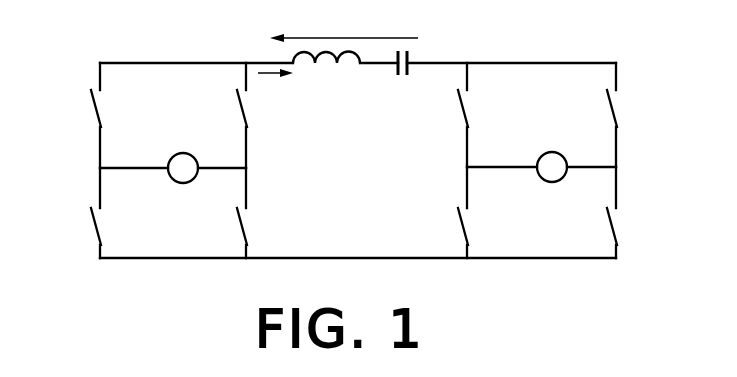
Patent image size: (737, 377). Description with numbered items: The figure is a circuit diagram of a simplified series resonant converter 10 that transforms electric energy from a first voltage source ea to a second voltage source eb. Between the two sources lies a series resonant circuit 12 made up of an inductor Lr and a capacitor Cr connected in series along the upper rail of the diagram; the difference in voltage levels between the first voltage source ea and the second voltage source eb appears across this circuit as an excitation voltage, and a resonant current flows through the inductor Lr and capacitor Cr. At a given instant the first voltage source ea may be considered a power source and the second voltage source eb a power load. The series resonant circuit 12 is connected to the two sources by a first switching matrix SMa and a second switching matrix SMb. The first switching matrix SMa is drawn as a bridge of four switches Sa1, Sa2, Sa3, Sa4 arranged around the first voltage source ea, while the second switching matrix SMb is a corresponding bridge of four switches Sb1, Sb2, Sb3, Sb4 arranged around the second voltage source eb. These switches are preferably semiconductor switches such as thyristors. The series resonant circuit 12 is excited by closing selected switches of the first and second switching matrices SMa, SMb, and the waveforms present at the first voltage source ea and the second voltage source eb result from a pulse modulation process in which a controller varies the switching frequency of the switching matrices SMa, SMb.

The series resonant converter 10 is at (411, 154).
The series resonant circuit 12 is at (351, 119).
The inductor Lr is at (326, 82).
The capacitor Cr is at (398, 81).
The first switching matrix SMa is at (169, 181).
The second switching matrix SMb is at (560, 181).
The first voltage source ea is at (183, 182).
The second voltage source eb is at (552, 181).
The switch of first switching matrix Sa1 is at (120, 115).
The switch of first switching matrix Sa2 is at (221, 213).
The switch of first switching matrix Sa3 is at (120, 213).
The switch of first switching matrix Sa4 is at (221, 115).
The switch of second switching matrix Sb1 is at (634, 212).
The switch of second switching matrix Sb2 is at (486, 115).
The switch of second switching matrix Sb3 is at (634, 115).
The switch of second switching matrix Sb4 is at (486, 212).